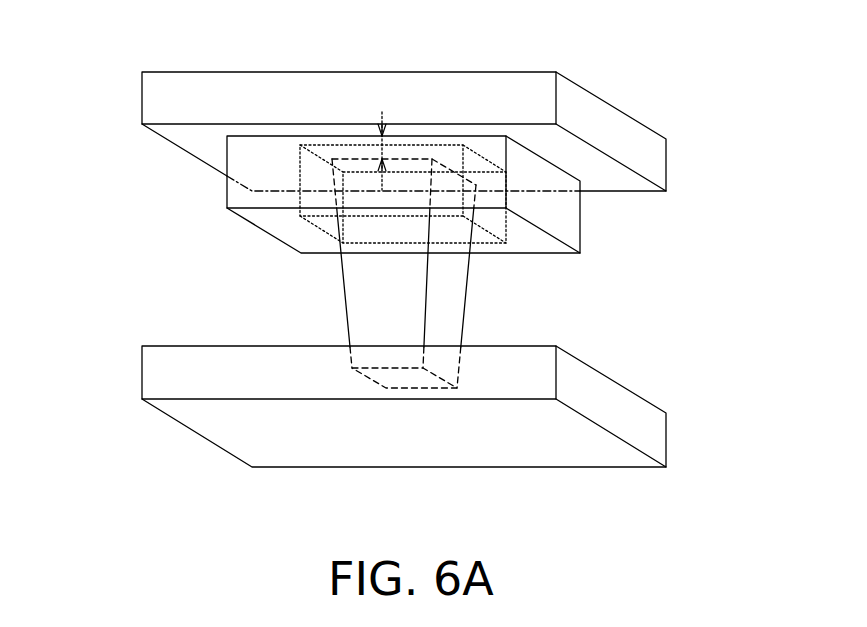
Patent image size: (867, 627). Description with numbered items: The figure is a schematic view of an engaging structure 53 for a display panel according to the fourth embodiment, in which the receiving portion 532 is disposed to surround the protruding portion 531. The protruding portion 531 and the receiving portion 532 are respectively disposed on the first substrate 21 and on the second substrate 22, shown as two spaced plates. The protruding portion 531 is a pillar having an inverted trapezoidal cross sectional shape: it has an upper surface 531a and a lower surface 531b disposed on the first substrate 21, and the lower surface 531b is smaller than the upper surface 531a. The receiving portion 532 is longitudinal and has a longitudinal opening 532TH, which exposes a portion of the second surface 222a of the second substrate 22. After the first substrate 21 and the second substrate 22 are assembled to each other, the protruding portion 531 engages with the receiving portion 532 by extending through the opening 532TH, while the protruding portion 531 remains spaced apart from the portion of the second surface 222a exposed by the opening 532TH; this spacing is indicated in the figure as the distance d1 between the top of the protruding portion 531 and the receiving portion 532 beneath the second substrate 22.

The first substrate 21 is at (643, 433).
The second substrate 22 is at (443, 155).
The second surface 222a is at (609, 172).
The engaging structure 53 is at (318, 268).
The protruding portion 531 is at (305, 296).
The upper surface 531a is at (353, 158).
The lower surface 531b is at (397, 385).
The receiving portion 532 is at (341, 141).
The opening 532TH is at (458, 168).
The distance d1 is at (384, 152).